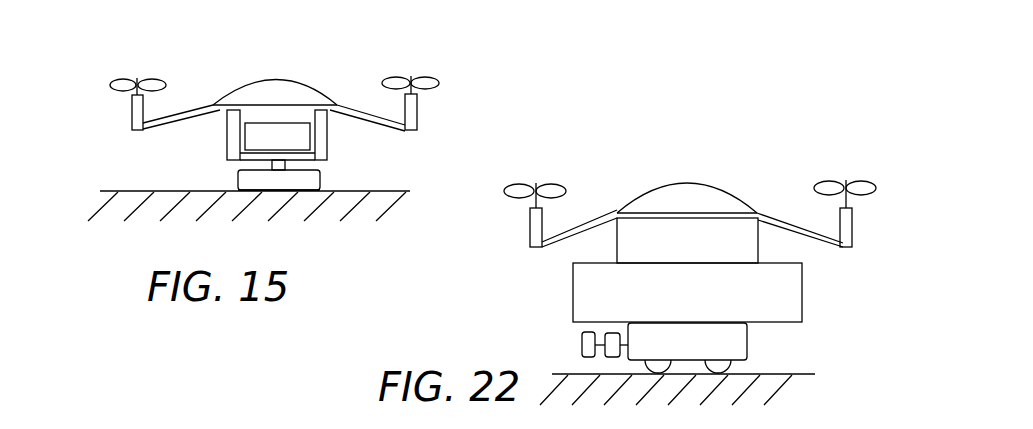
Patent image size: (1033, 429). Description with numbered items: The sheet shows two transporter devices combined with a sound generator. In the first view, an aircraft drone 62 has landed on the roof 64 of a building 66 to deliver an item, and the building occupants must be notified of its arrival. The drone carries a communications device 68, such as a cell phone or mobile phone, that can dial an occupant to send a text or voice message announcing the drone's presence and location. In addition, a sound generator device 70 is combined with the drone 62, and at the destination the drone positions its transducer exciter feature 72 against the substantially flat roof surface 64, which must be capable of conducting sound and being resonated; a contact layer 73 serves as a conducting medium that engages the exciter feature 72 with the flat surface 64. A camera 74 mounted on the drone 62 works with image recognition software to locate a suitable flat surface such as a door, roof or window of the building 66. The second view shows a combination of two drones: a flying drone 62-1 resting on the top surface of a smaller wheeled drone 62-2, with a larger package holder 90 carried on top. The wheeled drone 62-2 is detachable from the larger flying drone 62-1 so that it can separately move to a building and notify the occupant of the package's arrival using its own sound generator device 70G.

In FIG. 15, the aircraft drone 62 is at (292, 70).
In FIG. 15, the roof 64 is at (165, 190).
In FIG. 15, the building 66 is at (85, 212).
In FIG. 15, the communications device 68 is at (227, 137).
In FIG. 15, the sound generator device 70 is at (330, 162).
In FIG. 15, the transducer exciter feature 72 is at (327, 178).
In FIG. 15, the contact layer 73 is at (233, 198).
In FIG. 15, the camera 74 is at (327, 130).
In FIG. 22, the flying drone 62-1 is at (716, 182).
In FIG. 22, the wheeled drone 62-2 is at (750, 347).
In FIG. 22, the sound generator device 70G is at (573, 347).
In FIG. 22, the package holder 90 is at (583, 299).